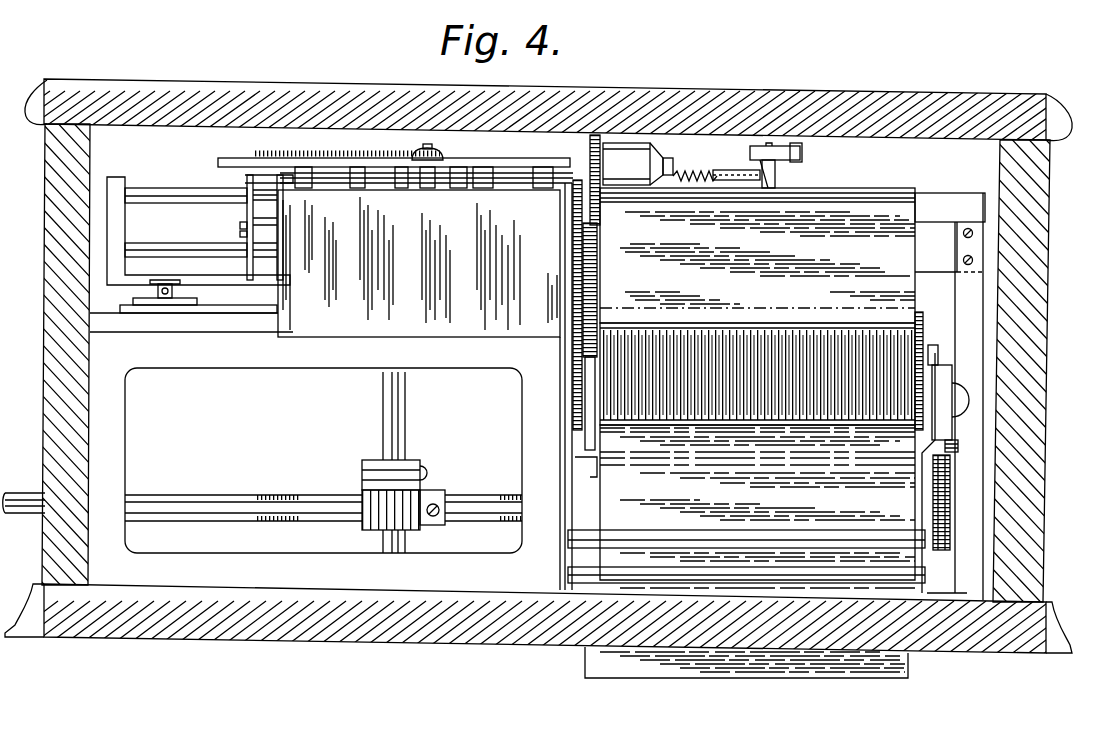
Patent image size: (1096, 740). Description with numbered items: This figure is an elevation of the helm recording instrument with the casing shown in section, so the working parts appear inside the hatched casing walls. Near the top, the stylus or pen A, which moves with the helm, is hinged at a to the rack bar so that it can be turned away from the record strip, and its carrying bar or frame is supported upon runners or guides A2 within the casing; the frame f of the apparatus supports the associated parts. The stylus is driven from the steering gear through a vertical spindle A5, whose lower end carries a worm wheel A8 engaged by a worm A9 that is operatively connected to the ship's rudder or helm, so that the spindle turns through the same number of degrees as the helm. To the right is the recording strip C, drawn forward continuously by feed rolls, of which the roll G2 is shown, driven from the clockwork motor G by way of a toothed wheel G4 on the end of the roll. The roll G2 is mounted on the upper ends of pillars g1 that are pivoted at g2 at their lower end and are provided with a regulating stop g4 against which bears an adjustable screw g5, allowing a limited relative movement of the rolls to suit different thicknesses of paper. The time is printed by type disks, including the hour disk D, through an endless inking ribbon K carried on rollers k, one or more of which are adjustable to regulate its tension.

The runners or guides A2 is at (152, 197).
The frame f is at (524, 173).
The hour disk D is at (583, 268).
The endless inking ribbon K is at (605, 148).
The rollers k is at (652, 152).
The hinge a is at (727, 172).
The stylus or pen A is at (777, 167).
The recording strip C is at (888, 212).
The clockwork motor G is at (419, 263).
The toothed wheel G4 is at (928, 313).
The feed roll G2 is at (897, 392).
The adjustable screw g5 is at (938, 355).
The regulating stop g4 is at (958, 443).
The pillars g1 is at (950, 465).
The pivot g2 is at (920, 583).
The spindle A5 is at (397, 407).
The worm wheel A8 is at (455, 495).
The worm A9 is at (362, 520).